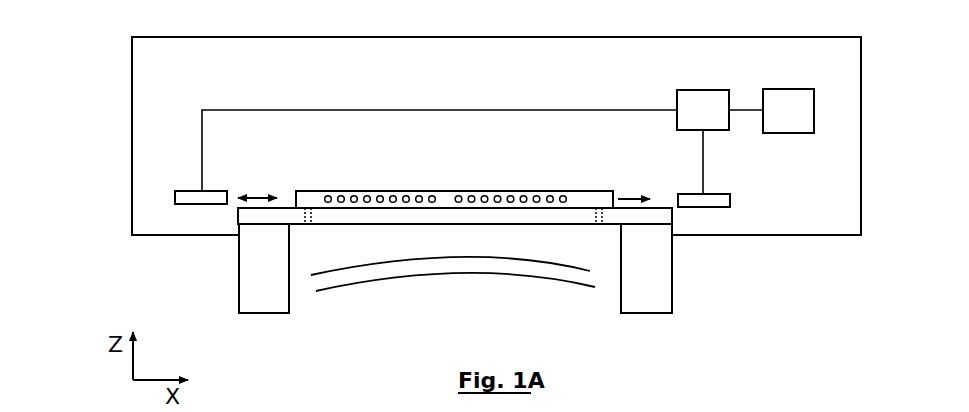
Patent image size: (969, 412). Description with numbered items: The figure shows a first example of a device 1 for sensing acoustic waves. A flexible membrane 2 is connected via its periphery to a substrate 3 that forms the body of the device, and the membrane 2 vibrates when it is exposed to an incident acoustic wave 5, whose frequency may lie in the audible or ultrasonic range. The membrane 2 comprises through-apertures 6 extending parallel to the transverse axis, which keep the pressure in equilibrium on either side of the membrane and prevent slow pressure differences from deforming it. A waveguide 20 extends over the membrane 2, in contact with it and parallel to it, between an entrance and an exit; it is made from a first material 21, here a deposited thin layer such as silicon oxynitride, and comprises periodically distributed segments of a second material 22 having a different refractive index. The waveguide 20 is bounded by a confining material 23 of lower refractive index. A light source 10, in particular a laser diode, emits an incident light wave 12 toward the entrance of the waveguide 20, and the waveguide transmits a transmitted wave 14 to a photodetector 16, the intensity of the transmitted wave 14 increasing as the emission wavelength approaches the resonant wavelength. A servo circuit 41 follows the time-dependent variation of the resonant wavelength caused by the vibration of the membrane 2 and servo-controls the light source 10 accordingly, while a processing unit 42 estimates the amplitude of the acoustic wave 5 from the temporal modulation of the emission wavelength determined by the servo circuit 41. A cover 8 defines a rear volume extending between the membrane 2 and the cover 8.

The device 1 is at (100, 72).
The cover 8 is at (130, 52).
The light source 10 is at (190, 188).
The photodetector 16 is at (680, 192).
The servo circuit 41 is at (711, 127).
The processing unit 42 is at (783, 129).
The flexible membrane 2 is at (578, 220).
The substrate 3 is at (263, 300).
The through-apertures 6 is at (308, 226).
The incident acoustic wave 5 is at (448, 277).
The waveguide 20 is at (316, 190).
The first material 21 is at (341, 194).
The second material 22 is at (458, 195).
The confining material 23 is at (497, 171).
The incident light wave 12 is at (268, 192).
The transmitted wave 14 is at (636, 192).